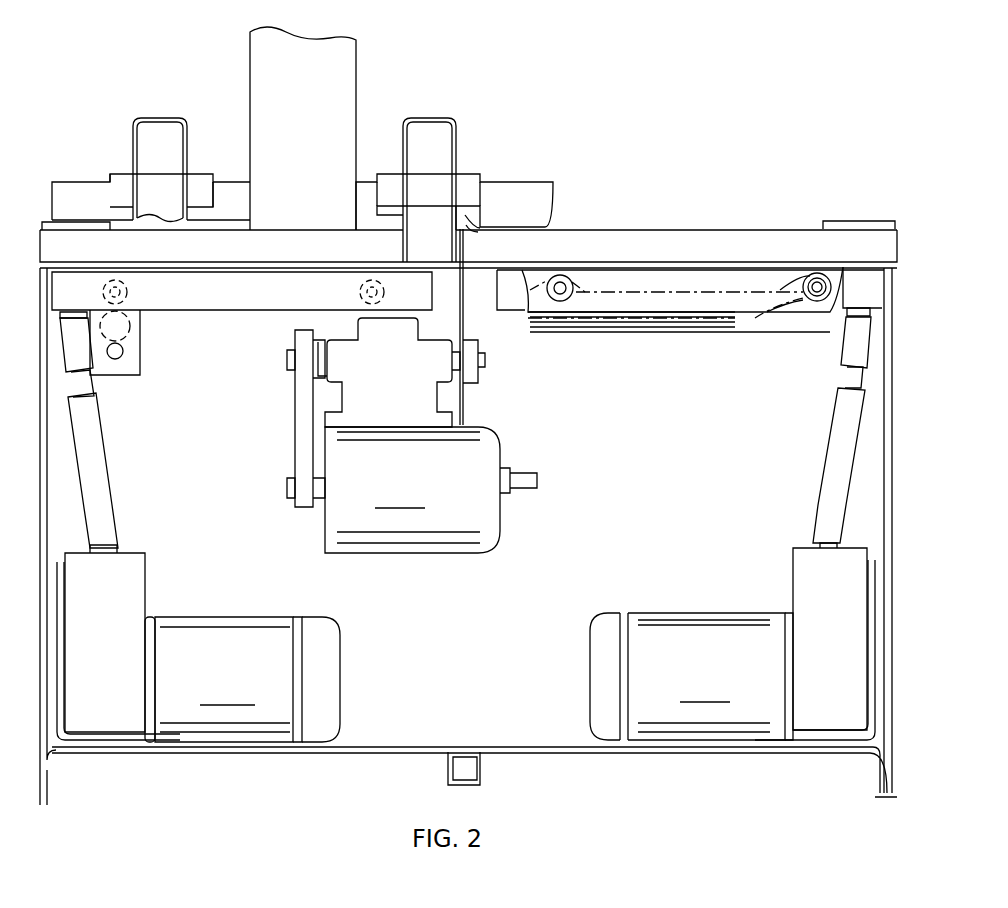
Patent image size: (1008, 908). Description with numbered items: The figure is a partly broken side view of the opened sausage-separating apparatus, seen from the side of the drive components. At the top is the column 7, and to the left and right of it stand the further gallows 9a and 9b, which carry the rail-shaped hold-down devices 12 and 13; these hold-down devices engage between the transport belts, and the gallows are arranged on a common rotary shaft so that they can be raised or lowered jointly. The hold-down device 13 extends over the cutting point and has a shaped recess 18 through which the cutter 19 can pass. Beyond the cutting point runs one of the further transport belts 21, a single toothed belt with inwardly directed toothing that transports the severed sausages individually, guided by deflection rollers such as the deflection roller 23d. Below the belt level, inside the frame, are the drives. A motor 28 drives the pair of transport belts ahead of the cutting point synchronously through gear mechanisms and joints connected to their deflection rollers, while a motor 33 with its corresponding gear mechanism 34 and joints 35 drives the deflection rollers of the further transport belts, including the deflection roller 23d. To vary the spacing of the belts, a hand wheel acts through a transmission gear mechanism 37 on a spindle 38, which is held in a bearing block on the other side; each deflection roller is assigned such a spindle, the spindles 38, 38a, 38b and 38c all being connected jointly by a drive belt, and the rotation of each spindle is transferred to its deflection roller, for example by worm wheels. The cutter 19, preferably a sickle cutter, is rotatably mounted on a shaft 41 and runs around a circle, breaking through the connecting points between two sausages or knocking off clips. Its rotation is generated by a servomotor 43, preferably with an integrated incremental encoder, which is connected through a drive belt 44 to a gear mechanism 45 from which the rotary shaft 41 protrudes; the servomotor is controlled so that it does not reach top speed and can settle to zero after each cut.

The column 7 is at (338, 88).
The gallows 9a is at (163, 118).
The gallows 9b is at (430, 118).
The hold-down device 12 is at (82, 190).
The hold-down device 13 is at (536, 196).
The shaped recess 18 is at (478, 222).
The cutter 19 is at (464, 318).
The transport belt 21 is at (714, 242).
The deflection roller 23d is at (846, 220).
The motor 28 is at (255, 640).
The motor 33 is at (670, 635).
The gear mechanism 34 is at (822, 590).
The joints 35 is at (842, 414).
The transmission gear mechanism 37 is at (131, 362).
The spindle 38 is at (128, 290).
The spindle 38a is at (358, 292).
The spindle 38b is at (570, 297).
The spindle 38c is at (780, 302).
The shaft 41 is at (486, 360).
The servomotor 43 is at (453, 517).
The drive belt 44 is at (294, 410).
The gear mechanism 45 is at (404, 372).